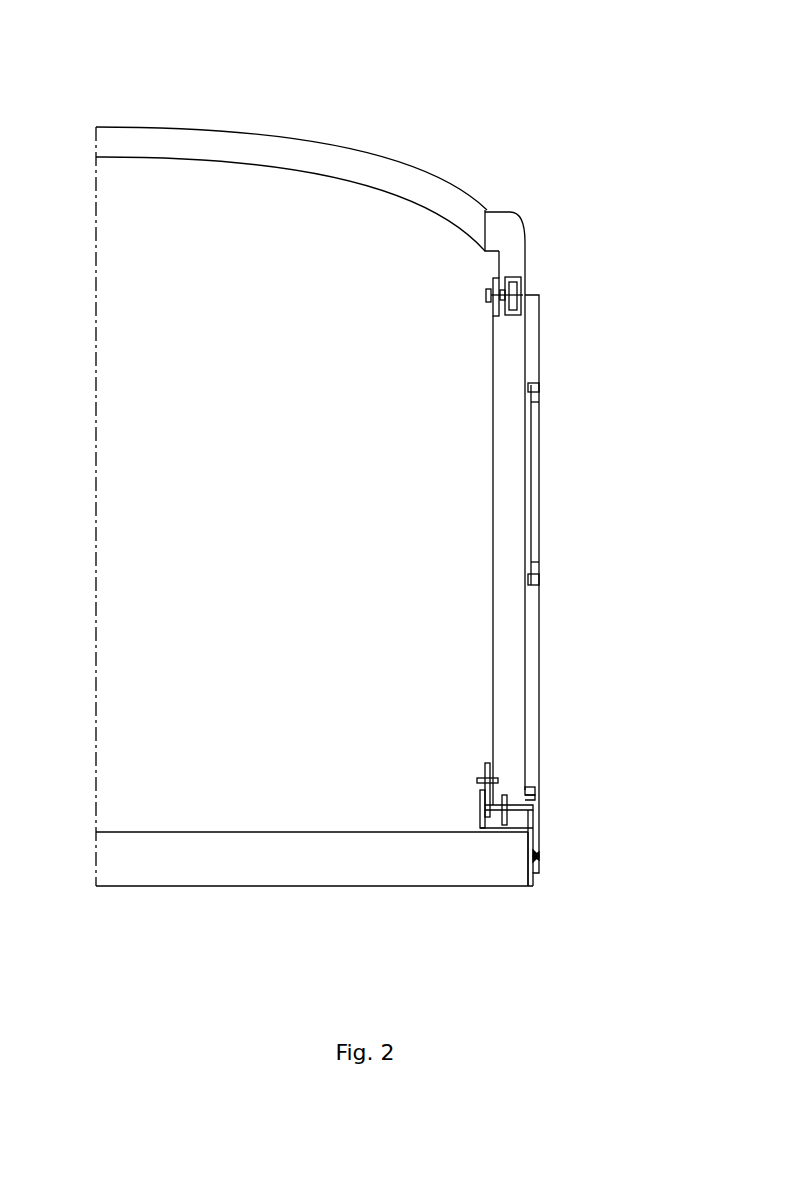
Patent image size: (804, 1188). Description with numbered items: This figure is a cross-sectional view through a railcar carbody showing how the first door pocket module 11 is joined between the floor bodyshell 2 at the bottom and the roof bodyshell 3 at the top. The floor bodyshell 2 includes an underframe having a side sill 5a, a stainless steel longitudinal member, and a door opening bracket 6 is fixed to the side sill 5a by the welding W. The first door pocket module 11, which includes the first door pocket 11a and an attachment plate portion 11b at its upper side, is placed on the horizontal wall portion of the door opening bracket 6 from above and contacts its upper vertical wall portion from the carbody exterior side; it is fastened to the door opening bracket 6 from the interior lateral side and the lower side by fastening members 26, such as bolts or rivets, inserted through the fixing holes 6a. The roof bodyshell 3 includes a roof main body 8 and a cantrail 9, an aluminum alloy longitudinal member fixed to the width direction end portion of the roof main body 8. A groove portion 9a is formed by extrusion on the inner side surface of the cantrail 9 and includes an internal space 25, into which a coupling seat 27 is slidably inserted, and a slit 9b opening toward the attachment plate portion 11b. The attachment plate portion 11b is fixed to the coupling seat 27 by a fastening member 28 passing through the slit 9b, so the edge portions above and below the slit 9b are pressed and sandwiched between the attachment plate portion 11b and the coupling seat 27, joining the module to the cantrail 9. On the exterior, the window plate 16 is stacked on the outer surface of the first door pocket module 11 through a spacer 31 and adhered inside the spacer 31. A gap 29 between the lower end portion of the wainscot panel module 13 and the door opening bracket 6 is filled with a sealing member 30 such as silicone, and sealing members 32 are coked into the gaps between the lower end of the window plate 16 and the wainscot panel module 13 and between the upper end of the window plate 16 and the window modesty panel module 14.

The floor bodyshell 2 is at (242, 886).
The roof bodyshell 3 is at (272, 137).
The side sill 5a is at (517, 888).
The door opening bracket 6 is at (539, 825).
The fixing hole 6a is at (493, 770).
The roof main body 8 is at (366, 155).
The cantrail 9 is at (513, 212).
The groove portion 9a is at (512, 278).
The slit 9b is at (500, 315).
The first door pocket module 11 is at (513, 653).
The first door pocket 11a is at (492, 597).
The attachment plate portion 11b is at (499, 280).
The wainscot panel module 13 is at (530, 698).
The window modesty panel module 14 is at (540, 342).
The window plate 16 is at (538, 498).
The internal space 25 is at (518, 292).
The fastening member 26 is at (503, 816).
The coupling seat 27 is at (511, 291).
The fastening member 28 is at (488, 295).
The gap 29 is at (539, 782).
The sealing member 30 is at (535, 798).
The spacer 31 is at (535, 402).
The sealing member 32 is at (534, 385).
The welding W is at (540, 858).